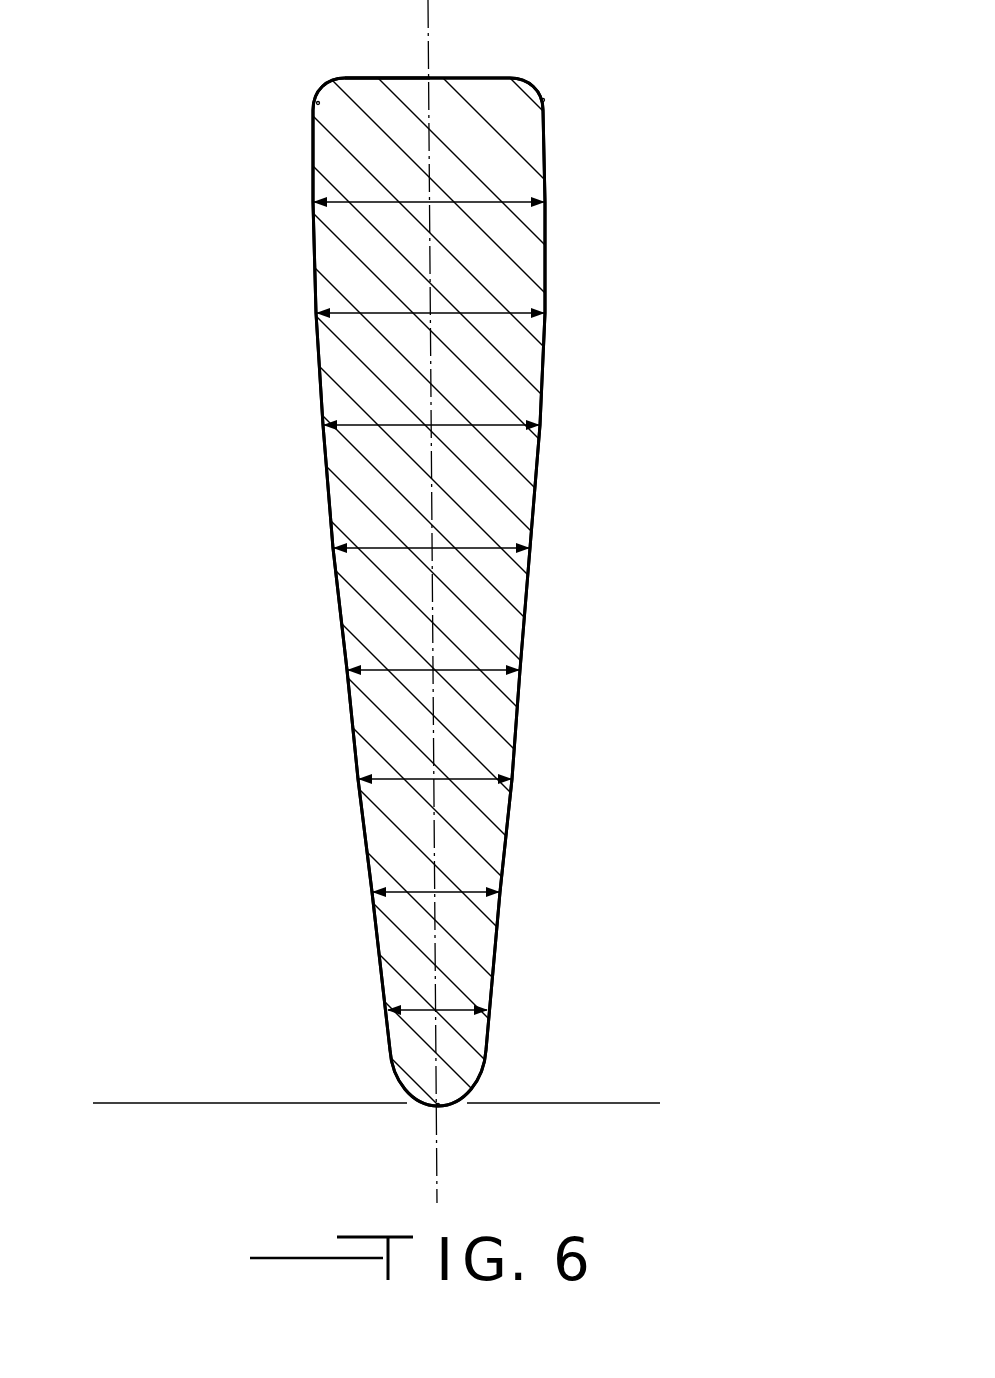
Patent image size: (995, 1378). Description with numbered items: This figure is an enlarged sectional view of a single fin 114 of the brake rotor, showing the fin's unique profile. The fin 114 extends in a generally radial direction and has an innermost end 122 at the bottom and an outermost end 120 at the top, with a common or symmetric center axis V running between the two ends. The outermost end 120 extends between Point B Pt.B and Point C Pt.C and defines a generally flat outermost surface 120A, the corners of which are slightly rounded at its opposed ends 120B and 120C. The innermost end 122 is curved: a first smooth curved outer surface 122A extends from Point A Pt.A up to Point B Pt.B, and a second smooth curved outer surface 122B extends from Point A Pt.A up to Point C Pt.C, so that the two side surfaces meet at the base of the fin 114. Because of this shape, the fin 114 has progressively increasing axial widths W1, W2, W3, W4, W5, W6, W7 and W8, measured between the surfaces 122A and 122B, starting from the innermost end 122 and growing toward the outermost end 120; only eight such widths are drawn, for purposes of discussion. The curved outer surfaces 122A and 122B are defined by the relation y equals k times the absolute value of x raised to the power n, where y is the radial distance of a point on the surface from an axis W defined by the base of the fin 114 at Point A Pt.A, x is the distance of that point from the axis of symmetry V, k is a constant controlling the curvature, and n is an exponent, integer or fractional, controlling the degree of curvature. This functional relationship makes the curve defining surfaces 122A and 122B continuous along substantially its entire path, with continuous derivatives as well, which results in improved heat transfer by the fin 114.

The fin 114 is at (690, 80).
The outermost end 120 is at (462, 70).
The flat outermost surface 120A is at (358, 78).
The rounded corner 120B is at (320, 85).
The rounded corner 120C is at (545, 82).
The innermost end 122 is at (443, 1108).
The first smooth curved outer surface 122A is at (360, 830).
The second smooth curved outer surface 122B is at (537, 515).
The Point A Pt.A is at (432, 1110).
The Point B Pt.B is at (318, 104).
The Point C Pt.C is at (545, 100).
The center axis V is at (432, 605).
The axis W is at (155, 1103).
The axial width W1 is at (455, 1010).
The axial width W2 is at (465, 892).
The axial width W3 is at (480, 779).
The axial width W4 is at (480, 670).
The axial width W5 is at (480, 548).
The axial width W6 is at (478, 425).
The axial width W7 is at (478, 313).
The axial width W8 is at (465, 202).